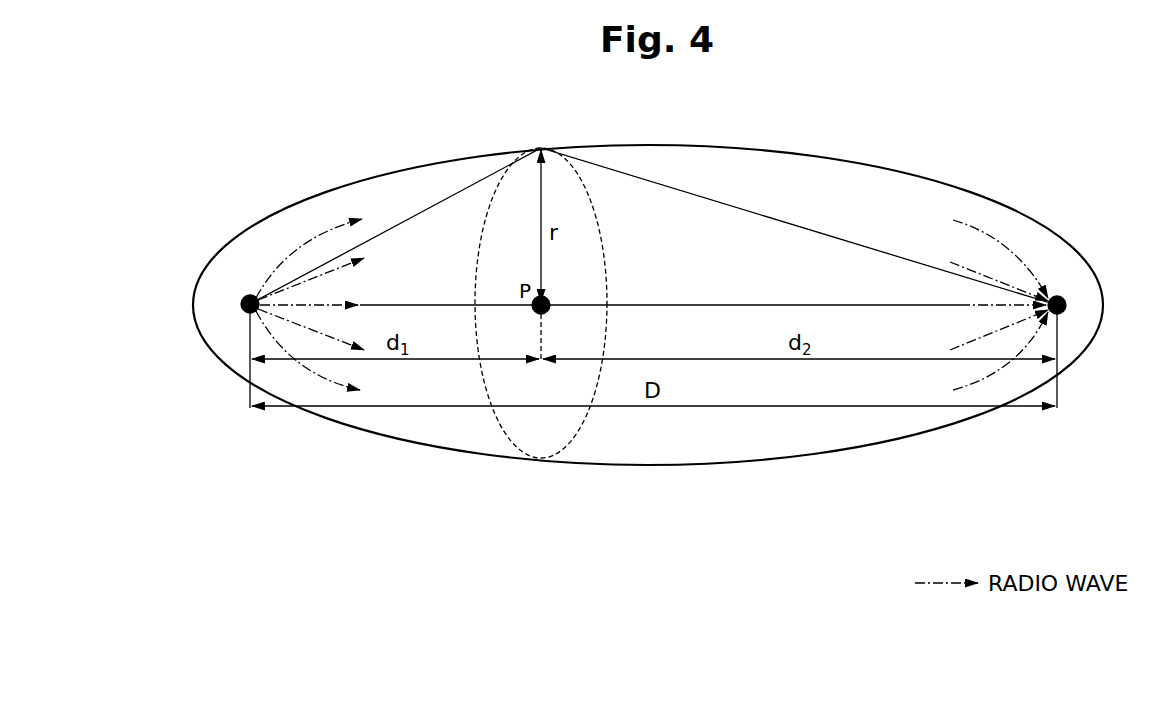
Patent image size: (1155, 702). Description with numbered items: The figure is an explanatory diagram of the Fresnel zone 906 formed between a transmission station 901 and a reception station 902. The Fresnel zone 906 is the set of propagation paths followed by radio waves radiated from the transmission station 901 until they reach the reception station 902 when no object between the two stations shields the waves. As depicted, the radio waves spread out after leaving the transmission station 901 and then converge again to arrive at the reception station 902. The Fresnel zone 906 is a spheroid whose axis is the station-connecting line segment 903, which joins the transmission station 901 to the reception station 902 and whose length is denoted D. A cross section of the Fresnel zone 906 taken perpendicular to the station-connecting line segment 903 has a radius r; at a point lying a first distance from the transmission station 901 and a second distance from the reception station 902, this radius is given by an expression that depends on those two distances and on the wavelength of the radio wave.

The transmission station 901 is at (244, 298).
The reception station 902 is at (1066, 298).
The station-connecting line segment 903 is at (708, 304).
The Fresnel zone 906 is at (774, 460).